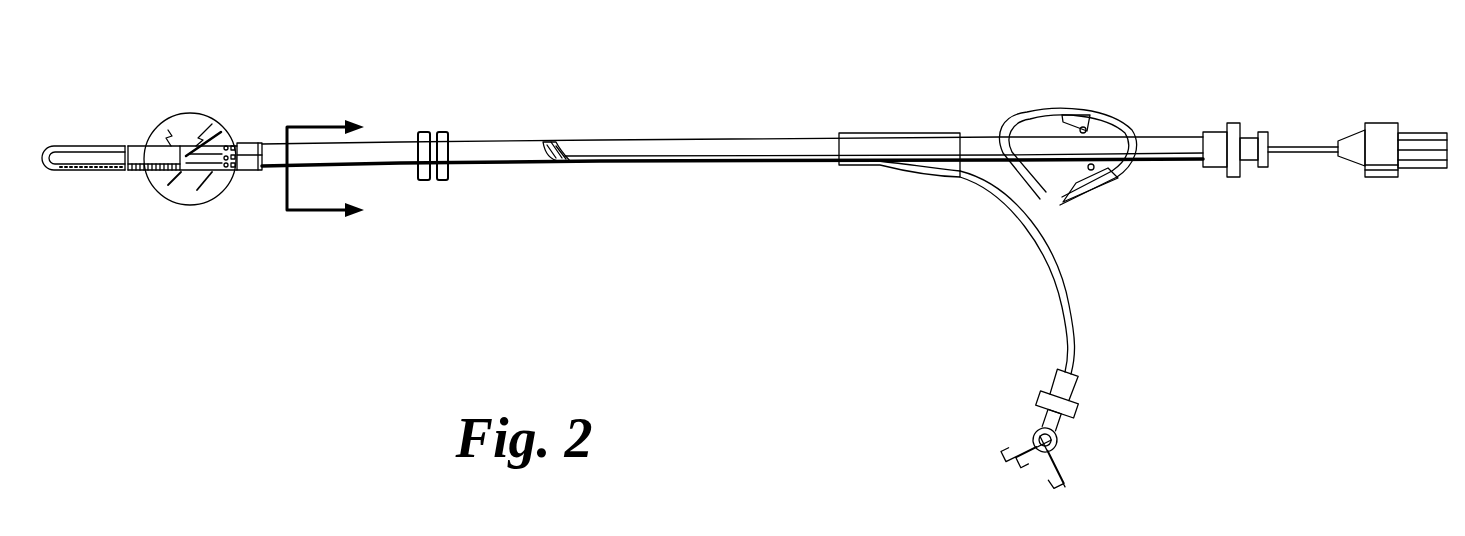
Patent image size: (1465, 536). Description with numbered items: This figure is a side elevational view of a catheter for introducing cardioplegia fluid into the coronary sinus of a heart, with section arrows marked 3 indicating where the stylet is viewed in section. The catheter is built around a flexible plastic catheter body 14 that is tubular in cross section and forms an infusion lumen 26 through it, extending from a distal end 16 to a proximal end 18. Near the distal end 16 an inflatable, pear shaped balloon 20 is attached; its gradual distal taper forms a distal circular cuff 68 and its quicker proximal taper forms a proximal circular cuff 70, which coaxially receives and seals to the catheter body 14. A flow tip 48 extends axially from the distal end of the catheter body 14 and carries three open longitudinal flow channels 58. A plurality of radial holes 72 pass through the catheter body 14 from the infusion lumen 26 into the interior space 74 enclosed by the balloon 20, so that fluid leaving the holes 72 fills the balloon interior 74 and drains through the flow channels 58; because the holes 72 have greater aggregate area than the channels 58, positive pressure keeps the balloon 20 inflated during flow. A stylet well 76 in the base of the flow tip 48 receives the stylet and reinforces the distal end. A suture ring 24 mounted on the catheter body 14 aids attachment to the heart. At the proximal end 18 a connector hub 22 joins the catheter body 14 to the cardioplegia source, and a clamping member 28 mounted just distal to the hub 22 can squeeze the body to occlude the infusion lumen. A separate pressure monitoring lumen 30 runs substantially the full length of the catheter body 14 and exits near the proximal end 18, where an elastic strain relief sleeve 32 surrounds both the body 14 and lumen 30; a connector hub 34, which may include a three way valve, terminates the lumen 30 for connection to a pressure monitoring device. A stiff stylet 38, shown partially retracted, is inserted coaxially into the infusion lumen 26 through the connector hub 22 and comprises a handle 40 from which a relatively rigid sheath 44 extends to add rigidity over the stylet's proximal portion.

The section line 3- 3 is at (336, 169).
The catheter body 14 is at (572, 170).
The distal end 16 is at (72, 146).
The proximal end 18 is at (1256, 192).
The inflatable balloon 20 is at (231, 141).
The connector hub 22 is at (1216, 170).
The suture ring 24 is at (451, 134).
The infusion lumen 26 is at (553, 142).
The clamping member 28 is at (1095, 104).
The pressure monitoring lumen 30 is at (553, 170).
The strain relief sleeve 32 is at (905, 140).
The connector hub 34 is at (1062, 438).
The stylet 38 is at (1300, 122).
The handle 40 is at (1413, 170).
The sheath 44 is at (1326, 157).
The flow tip 48 is at (124, 130).
The flow channels 58 is at (131, 143).
The distal circular cuff 68 is at (141, 144).
The proximal circular cuff 70 is at (245, 171).
The radial holes 72 is at (243, 147).
The interior space 74 is at (206, 184).
The stylet well 76 is at (230, 150).